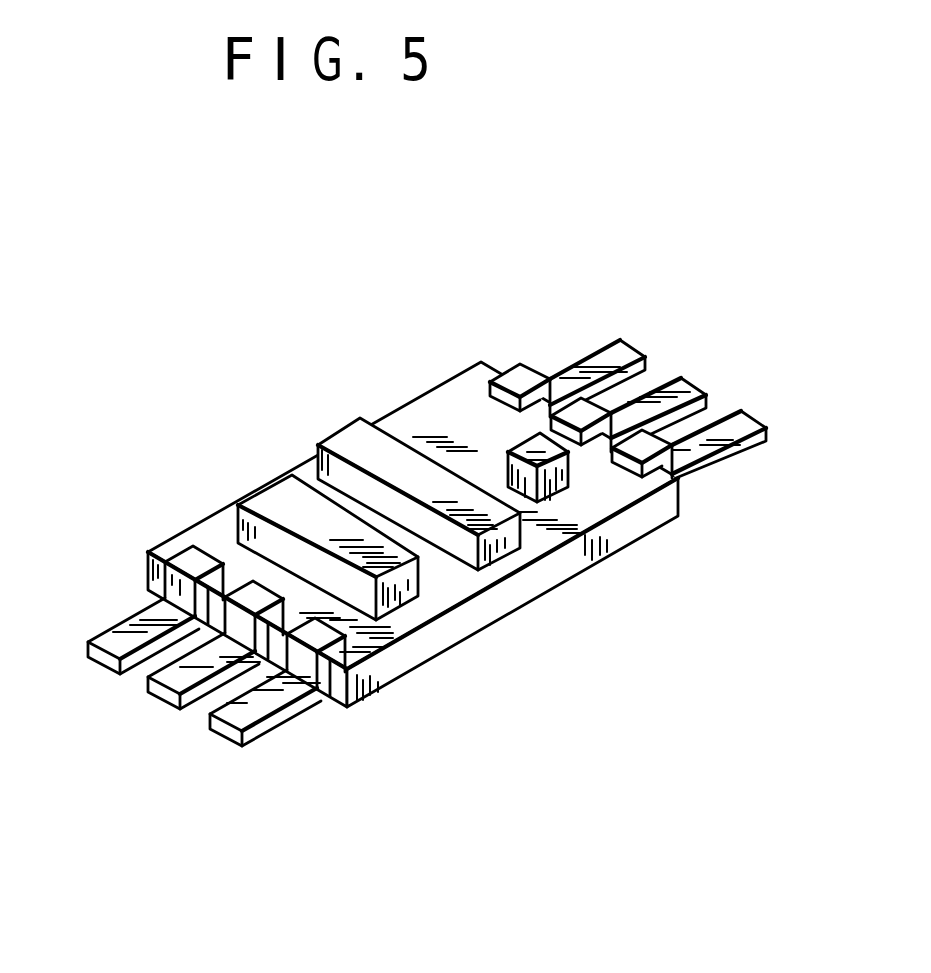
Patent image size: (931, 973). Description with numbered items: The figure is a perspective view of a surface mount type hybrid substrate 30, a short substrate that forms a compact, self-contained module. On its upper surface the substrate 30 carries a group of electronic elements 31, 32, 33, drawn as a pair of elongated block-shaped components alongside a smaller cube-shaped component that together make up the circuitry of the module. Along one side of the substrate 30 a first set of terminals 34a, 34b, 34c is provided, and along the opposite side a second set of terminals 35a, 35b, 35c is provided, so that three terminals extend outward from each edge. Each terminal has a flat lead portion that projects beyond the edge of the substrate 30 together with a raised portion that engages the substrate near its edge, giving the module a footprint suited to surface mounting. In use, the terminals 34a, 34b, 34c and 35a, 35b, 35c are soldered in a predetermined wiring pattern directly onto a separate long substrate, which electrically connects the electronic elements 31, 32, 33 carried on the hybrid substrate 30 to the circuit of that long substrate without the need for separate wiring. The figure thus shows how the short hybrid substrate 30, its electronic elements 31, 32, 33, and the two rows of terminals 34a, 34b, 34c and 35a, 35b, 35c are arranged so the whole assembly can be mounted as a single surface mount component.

The surface mount type hybrid substrate 30 is at (500, 598).
The electronic element 31 is at (267, 505).
The electronic element 32 is at (347, 442).
The electronic element 33 is at (527, 453).
The terminal 34a is at (132, 627).
The terminal 34b is at (160, 687).
The terminal 34c is at (239, 728).
The terminal 35a is at (598, 358).
The terminal 35b is at (688, 383).
The terminal 35c is at (742, 422).